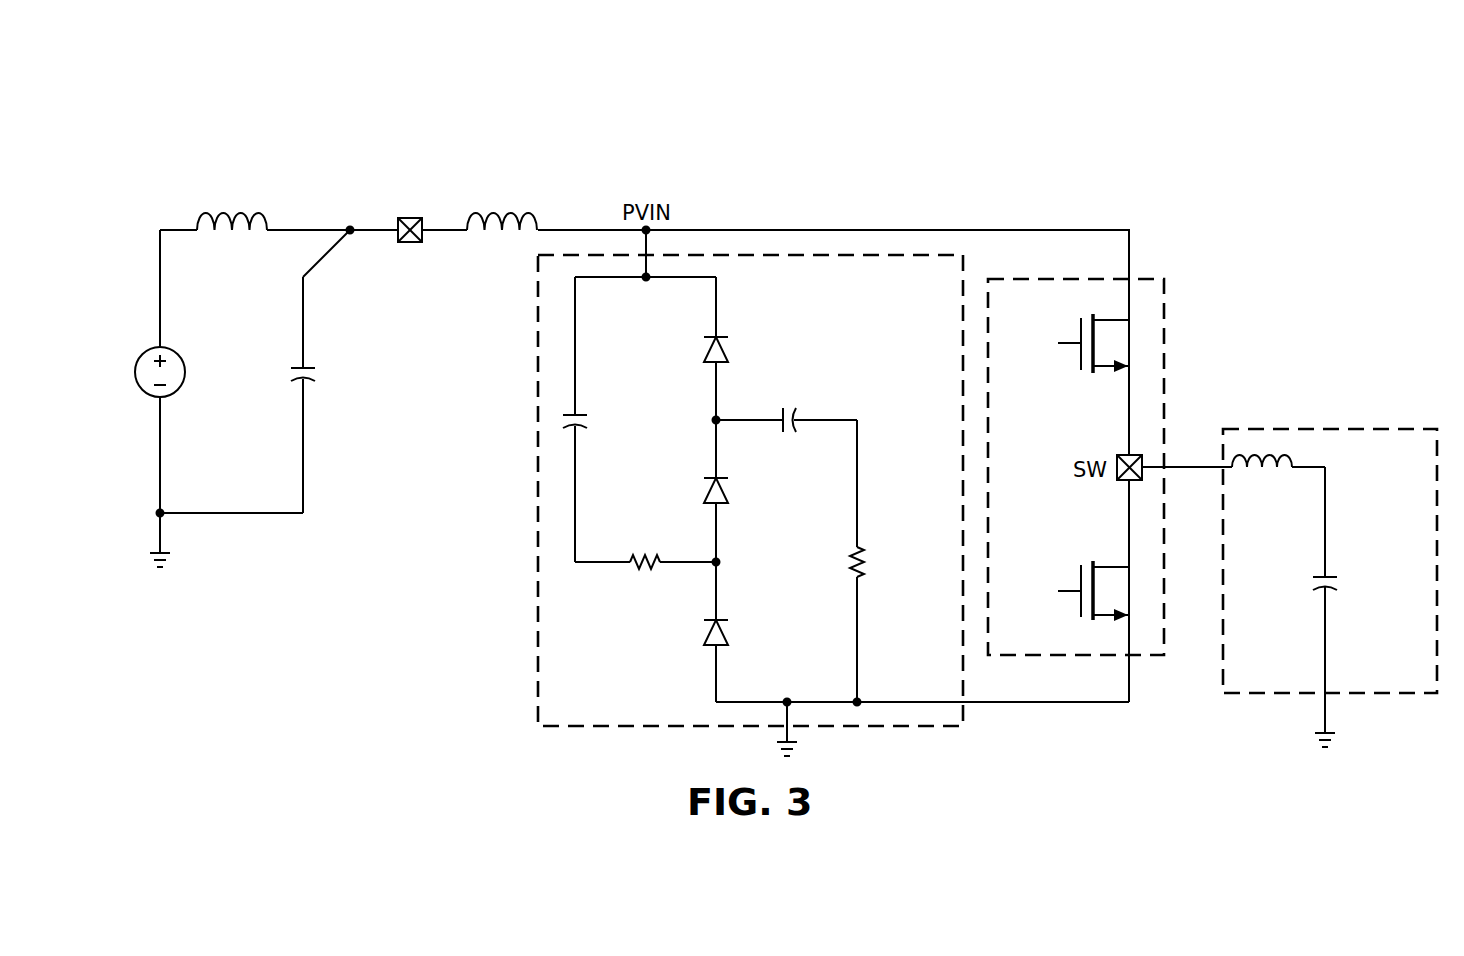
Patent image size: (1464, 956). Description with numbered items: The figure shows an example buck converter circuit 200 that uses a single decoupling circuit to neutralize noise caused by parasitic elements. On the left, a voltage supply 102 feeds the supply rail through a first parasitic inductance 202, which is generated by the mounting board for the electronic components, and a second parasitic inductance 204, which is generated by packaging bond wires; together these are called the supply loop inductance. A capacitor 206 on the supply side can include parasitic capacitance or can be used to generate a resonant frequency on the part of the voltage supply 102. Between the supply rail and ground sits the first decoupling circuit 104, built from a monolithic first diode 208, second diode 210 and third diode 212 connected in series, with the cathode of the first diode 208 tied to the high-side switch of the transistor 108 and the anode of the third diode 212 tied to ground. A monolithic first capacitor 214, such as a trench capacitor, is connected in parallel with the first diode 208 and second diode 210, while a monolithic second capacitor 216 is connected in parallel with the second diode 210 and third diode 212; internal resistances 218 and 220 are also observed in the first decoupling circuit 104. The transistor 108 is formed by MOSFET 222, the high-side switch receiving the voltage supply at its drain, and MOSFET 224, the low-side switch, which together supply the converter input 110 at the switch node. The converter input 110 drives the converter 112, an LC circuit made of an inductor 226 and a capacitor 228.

The voltage supply 102 is at (186, 372).
The first decoupling circuit 104 is at (538, 552).
The transistor 108 is at (1168, 313).
The converter input 110 is at (1188, 462).
The converter 112 is at (1372, 429).
The buck converter circuit 200 is at (1072, 135).
The first parasitic inductance 202 is at (197, 222).
The second parasitic inductance 204 is at (462, 222).
The capacitor 206 is at (316, 377).
The first diode 208 is at (704, 347).
The second diode 210 is at (724, 493).
The third diode 212 is at (724, 635).
The first capacitor 214 is at (588, 421).
The second capacitor 216 is at (787, 404).
The internal resistance 218 is at (645, 568).
The internal resistance 220 is at (863, 565).
The MOSFET 222 is at (1078, 331).
The MOSFET 224 is at (1080, 602).
The inductor 226 is at (1267, 470).
The capacitor 228 is at (1340, 583).